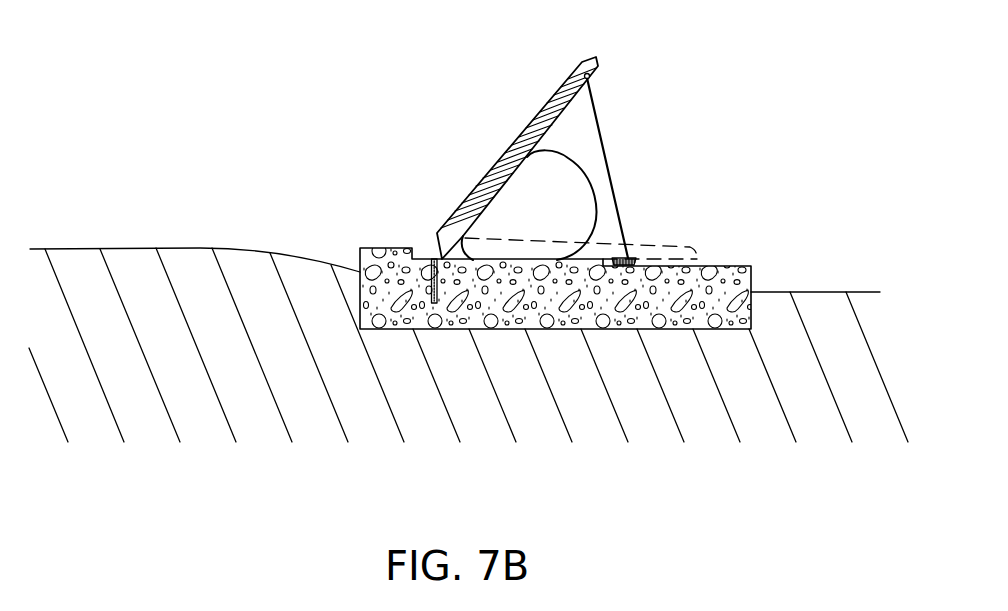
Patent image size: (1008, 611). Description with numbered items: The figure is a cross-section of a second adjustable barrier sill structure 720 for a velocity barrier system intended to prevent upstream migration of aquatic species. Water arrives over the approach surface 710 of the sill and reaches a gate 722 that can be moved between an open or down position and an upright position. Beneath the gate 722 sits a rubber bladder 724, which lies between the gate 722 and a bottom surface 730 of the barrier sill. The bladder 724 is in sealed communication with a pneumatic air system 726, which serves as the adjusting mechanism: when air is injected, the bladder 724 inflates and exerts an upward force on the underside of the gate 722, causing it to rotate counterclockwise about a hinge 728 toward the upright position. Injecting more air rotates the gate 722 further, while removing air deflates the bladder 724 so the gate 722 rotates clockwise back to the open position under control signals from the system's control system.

The approach surface 710 is at (336, 256).
The adjustable barrier sill structure 720 is at (491, 173).
The gate 722 is at (538, 112).
The bladder 724 is at (585, 217).
The pneumatic air system 726 is at (626, 134).
The hinge 728 is at (440, 258).
The bottom surface 730 is at (606, 258).